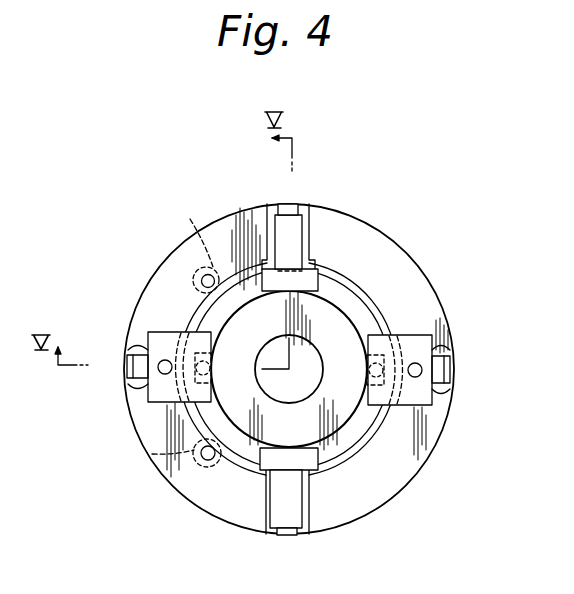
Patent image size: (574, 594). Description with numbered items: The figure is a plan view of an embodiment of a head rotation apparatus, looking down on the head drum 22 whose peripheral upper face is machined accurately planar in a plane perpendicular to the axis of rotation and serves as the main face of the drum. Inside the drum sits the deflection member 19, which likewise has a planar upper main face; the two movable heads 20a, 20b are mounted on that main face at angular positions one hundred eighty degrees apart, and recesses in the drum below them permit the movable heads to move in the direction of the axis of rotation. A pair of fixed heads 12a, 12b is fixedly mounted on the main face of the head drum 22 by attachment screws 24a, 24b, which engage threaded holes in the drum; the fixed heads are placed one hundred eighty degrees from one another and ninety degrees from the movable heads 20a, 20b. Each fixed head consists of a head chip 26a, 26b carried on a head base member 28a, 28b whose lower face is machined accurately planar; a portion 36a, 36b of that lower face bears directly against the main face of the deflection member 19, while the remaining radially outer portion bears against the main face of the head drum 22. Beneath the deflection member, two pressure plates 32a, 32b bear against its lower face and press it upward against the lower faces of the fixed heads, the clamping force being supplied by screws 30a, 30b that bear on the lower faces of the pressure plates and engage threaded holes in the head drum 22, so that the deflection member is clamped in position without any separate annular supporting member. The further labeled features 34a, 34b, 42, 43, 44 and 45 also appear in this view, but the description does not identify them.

The fixed head 12a is at (167, 331).
The fixed head 12b is at (418, 405).
The deflection member 19 is at (353, 302).
The movable head 20a is at (264, 506).
The movable head 20b is at (269, 237).
The head drum 22 is at (221, 511).
The attachment screw 24a is at (165, 376).
The attachment screw 24b is at (416, 361).
The head chip 26a is at (126, 370).
The head chip 26b is at (451, 364).
The head base member 28a is at (154, 343).
The head base member 28b is at (433, 396).
The screw 30a is at (212, 358).
The screw 30b is at (367, 379).
The pressure plate 32a is at (212, 380).
The pressure plate 32b is at (367, 358).
The tongue end 34a is at (293, 538).
The tongue end 34b is at (289, 206).
The lower face portion 36a is at (296, 503).
The lower face portion 36b is at (297, 229).
The pin 42 is at (152, 455).
The spring arm 43 is at (205, 459).
The pin 44 is at (203, 281).
The spring arm 45 is at (195, 231).